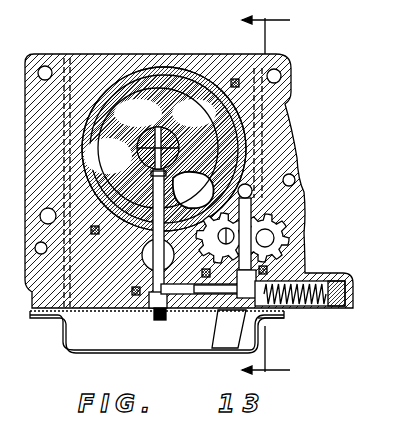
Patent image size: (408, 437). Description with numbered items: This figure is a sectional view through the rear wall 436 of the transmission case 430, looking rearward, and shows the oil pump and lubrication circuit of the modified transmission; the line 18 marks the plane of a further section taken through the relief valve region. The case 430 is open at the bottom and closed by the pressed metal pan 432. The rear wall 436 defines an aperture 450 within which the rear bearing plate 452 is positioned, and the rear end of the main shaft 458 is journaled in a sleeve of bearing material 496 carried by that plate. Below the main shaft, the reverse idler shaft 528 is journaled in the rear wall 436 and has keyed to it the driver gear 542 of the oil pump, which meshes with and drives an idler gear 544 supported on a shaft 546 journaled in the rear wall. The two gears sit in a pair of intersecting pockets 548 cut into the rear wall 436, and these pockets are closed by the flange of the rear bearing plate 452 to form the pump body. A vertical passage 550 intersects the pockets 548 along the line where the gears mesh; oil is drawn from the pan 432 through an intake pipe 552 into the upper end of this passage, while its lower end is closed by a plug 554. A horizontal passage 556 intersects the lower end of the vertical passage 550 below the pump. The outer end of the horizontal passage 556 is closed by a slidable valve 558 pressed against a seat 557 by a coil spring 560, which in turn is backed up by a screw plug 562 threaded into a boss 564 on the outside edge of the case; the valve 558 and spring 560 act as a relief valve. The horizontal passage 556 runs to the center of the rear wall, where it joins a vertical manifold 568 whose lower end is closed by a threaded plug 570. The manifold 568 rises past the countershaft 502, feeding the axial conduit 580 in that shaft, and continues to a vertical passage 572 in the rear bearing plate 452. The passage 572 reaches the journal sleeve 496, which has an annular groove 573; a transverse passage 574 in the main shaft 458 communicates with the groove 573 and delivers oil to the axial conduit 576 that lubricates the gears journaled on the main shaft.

The section line 18— 18 is at (279, 200).
The case 430 is at (93, 50).
The pressed metal pan 432 is at (136, 343).
The rear wall 436 is at (214, 62).
The aperture 450 is at (152, 62).
The rear bearing plate 452 is at (122, 68).
The main shaft 458 is at (130, 140).
The sleeve of bearing material 496 is at (146, 118).
The countershaft 502 is at (140, 258).
The reverse idler shaft 528 is at (205, 248).
The driver gear 542 is at (199, 230).
The idler gear 544 is at (296, 224).
The shaft 546 is at (298, 247).
The intersecting pockets 548 is at (292, 198).
The vertical passage 550 is at (294, 184).
The intake pipe 552 is at (215, 332).
The plug 554 is at (225, 312).
The horizontal passage 556 is at (196, 268).
The seat 557 is at (221, 278).
The valve 558 is at (263, 312).
The coil spring 560 is at (322, 300).
The screw plug 562 is at (337, 283).
The boss 564 is at (313, 264).
The vertical manifold 568 is at (149, 301).
The threaded plug 570 is at (152, 304).
The vertical passage 572 is at (193, 190).
The annular groove 573 is at (163, 128).
The transverse passage 574 is at (125, 152).
The axial conduit 576 is at (171, 140).
The axial conduit 580 is at (140, 250).